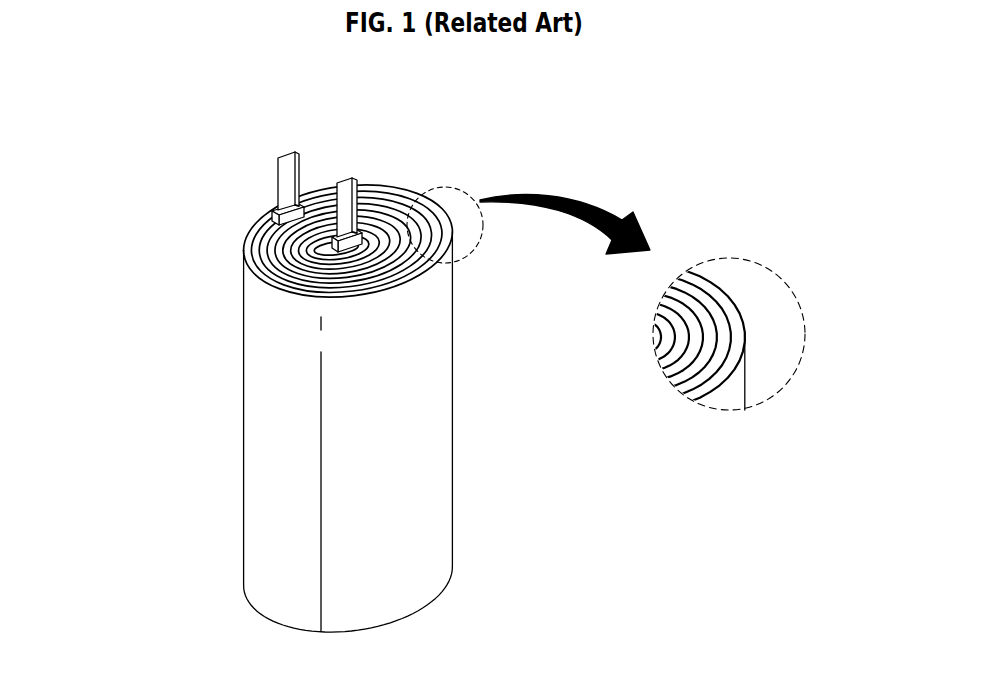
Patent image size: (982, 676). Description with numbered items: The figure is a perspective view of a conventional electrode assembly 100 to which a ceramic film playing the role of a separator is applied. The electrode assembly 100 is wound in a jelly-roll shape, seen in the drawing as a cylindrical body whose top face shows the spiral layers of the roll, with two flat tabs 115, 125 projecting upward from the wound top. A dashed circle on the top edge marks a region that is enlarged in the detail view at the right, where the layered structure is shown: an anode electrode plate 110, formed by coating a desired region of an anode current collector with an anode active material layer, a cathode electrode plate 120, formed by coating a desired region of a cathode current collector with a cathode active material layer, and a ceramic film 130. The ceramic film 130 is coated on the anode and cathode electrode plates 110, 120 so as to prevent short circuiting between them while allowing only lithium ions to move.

The electrode assembly 100 is at (152, 244).
The anode electrode plate 110 is at (690, 344).
The positive electrode tab 115 is at (350, 195).
The cathode electrode plate 120 is at (710, 357).
The negative electrode tab 125 is at (288, 168).
The ceramic film 130 is at (662, 372).